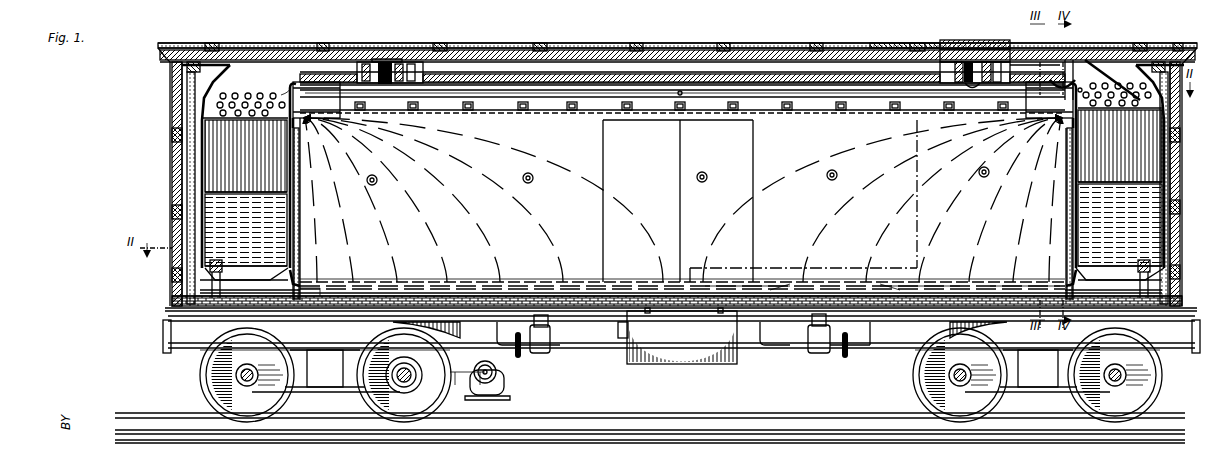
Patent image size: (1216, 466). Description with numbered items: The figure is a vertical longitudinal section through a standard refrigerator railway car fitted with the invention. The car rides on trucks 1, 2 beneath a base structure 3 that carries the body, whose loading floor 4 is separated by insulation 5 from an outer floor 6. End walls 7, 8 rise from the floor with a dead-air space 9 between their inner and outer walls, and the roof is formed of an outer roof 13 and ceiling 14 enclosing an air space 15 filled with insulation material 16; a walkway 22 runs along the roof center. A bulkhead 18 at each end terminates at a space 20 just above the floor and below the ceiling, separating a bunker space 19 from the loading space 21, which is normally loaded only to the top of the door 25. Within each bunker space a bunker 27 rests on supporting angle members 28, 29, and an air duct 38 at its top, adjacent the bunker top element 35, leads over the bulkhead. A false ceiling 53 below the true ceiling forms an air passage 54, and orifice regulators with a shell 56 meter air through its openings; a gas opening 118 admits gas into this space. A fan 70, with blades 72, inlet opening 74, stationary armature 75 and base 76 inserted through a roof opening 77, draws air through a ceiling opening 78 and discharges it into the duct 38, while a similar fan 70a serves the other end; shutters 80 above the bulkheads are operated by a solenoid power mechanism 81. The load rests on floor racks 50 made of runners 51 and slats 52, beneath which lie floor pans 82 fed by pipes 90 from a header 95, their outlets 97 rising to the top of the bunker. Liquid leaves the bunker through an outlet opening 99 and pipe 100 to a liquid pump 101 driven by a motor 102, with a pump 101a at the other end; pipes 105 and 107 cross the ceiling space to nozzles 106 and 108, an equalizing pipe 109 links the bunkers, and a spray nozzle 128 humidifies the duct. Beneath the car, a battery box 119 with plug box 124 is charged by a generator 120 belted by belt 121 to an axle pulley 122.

The truck 1 is at (1047, 370).
The truck 2 is at (333, 380).
The base structure 3 is at (1162, 348).
The loading floor 4 is at (574, 314).
The insulation 5 is at (586, 312).
The outer floor 6 is at (604, 312).
The end wall 7 is at (1180, 146).
The end wall 8 is at (180, 165).
The dead-air space 9 is at (183, 190).
The outer roof 13 is at (865, 50).
The ceiling 14 is at (830, 66).
The air space 15 is at (755, 62).
The insulation material 16 is at (578, 78).
The bulkhead 18 is at (300, 250).
The bunker space 19 is at (205, 290).
The space below bulkhead 20 is at (300, 283).
The loading space 21 is at (540, 128).
The walkway 22 is at (903, 47).
The door 25 is at (740, 178).
The bunker 27 is at (218, 133).
The supporting angle member 28 is at (1080, 280).
The supporting angle member 29 is at (1168, 268).
The bunker deflector 35 is at (1118, 80).
The air duct 38 is at (1055, 64).
The floor rack 50 is at (820, 290).
The runner 51 is at (922, 290).
The slat 52 is at (968, 292).
The false ceiling 53 is at (765, 111).
The air passage 54 is at (722, 96).
The shell 56 is at (833, 107).
The fan 70 is at (960, 76).
The fan 70a is at (398, 66).
The blade 72 is at (1005, 70).
The air inlet opening 74 is at (990, 74).
The stationary armature 75 is at (970, 62).
The base 76 is at (988, 62).
The opening 77 is at (935, 42).
The opening 78 is at (1000, 80).
The shutter 80 is at (298, 124).
The power mechanism 81 is at (1048, 120).
The floor pan 82 is at (760, 292).
The pipe 90 is at (308, 296).
The header 95 is at (287, 300).
The outlet connection 97 is at (300, 96).
The outlet opening 99 is at (222, 280).
The pipe 100 is at (195, 302).
The liquid pump 101 is at (850, 352).
The pump 101a is at (522, 352).
The power mechanism 102 is at (822, 350).
The pipe 105 is at (656, 87).
The nozzle 106 is at (281, 95).
The pipe 107 is at (598, 101).
The nozzle 108 is at (1080, 88).
The equalizing pipe 109 is at (242, 306).
The gas opening 118 is at (680, 91).
The battery box 119 is at (670, 356).
The generator 120 is at (500, 388).
The belt 121 is at (470, 382).
The pulley 122 is at (404, 380).
The electrical plug box 124 is at (620, 342).
The spray nozzle 128 is at (1080, 80).